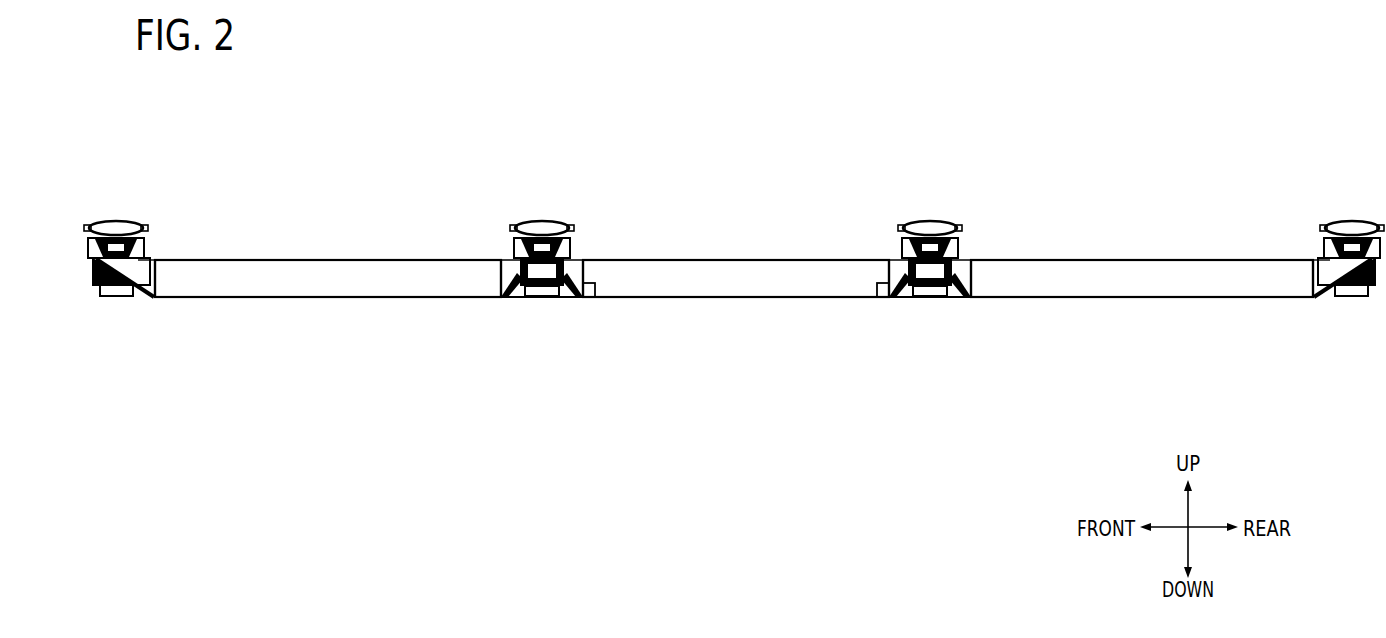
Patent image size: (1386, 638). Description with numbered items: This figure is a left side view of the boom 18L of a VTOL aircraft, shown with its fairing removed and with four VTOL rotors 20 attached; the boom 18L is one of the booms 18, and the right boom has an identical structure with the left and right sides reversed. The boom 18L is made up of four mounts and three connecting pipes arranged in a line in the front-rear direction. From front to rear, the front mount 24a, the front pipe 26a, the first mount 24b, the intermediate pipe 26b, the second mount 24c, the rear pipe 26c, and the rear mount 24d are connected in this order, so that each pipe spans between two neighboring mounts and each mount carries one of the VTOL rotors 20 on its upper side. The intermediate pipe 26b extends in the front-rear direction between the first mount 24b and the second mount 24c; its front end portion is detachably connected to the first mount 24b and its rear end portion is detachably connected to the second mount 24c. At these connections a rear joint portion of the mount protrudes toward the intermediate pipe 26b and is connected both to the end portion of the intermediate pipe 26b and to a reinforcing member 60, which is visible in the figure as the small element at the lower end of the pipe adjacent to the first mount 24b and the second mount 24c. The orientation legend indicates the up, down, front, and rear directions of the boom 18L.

The boom 18L is at (610, 89).
The boom 18 is at (734, 252).
The VTOL rotor 20 is at (118, 214).
The front mount 24a is at (143, 298).
The first mount 24b is at (512, 279).
The second mount 24c is at (960, 279).
The rear mount 24d is at (1318, 288).
The front pipe 26a is at (302, 276).
The intermediate pipe 26b is at (708, 276).
The rear pipe 26c is at (1068, 276).
The reinforcing member 60 is at (594, 280).